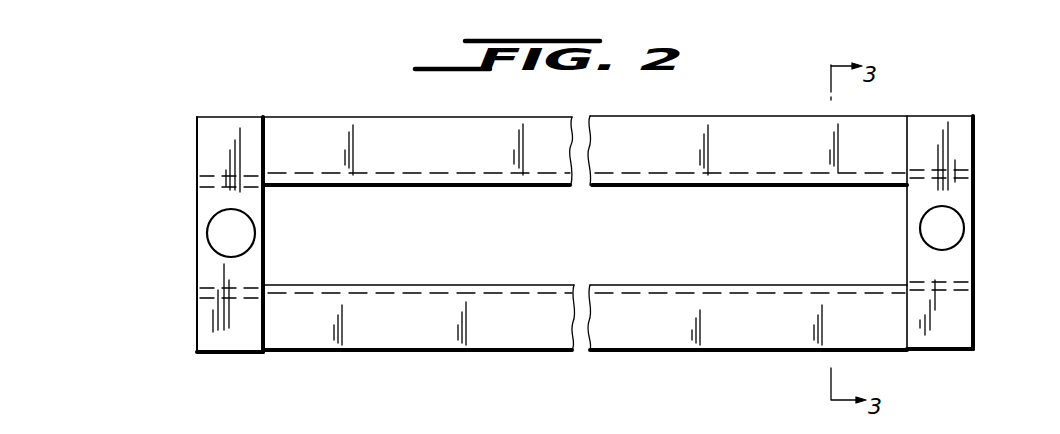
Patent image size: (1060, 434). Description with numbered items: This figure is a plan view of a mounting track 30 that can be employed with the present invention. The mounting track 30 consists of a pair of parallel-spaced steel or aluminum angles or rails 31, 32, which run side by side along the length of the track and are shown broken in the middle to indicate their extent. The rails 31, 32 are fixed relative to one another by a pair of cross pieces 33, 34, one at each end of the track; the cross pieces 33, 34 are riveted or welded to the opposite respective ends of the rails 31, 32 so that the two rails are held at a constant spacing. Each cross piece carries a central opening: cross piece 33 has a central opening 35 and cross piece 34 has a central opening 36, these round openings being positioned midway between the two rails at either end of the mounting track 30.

The mounting track 30 is at (262, 92).
The rail 31 is at (376, 131).
The rail 32 is at (375, 345).
The cross piece 33 is at (210, 270).
The cross piece 34 is at (962, 261).
The central opening 35 is at (245, 240).
The central opening 36 is at (924, 236).